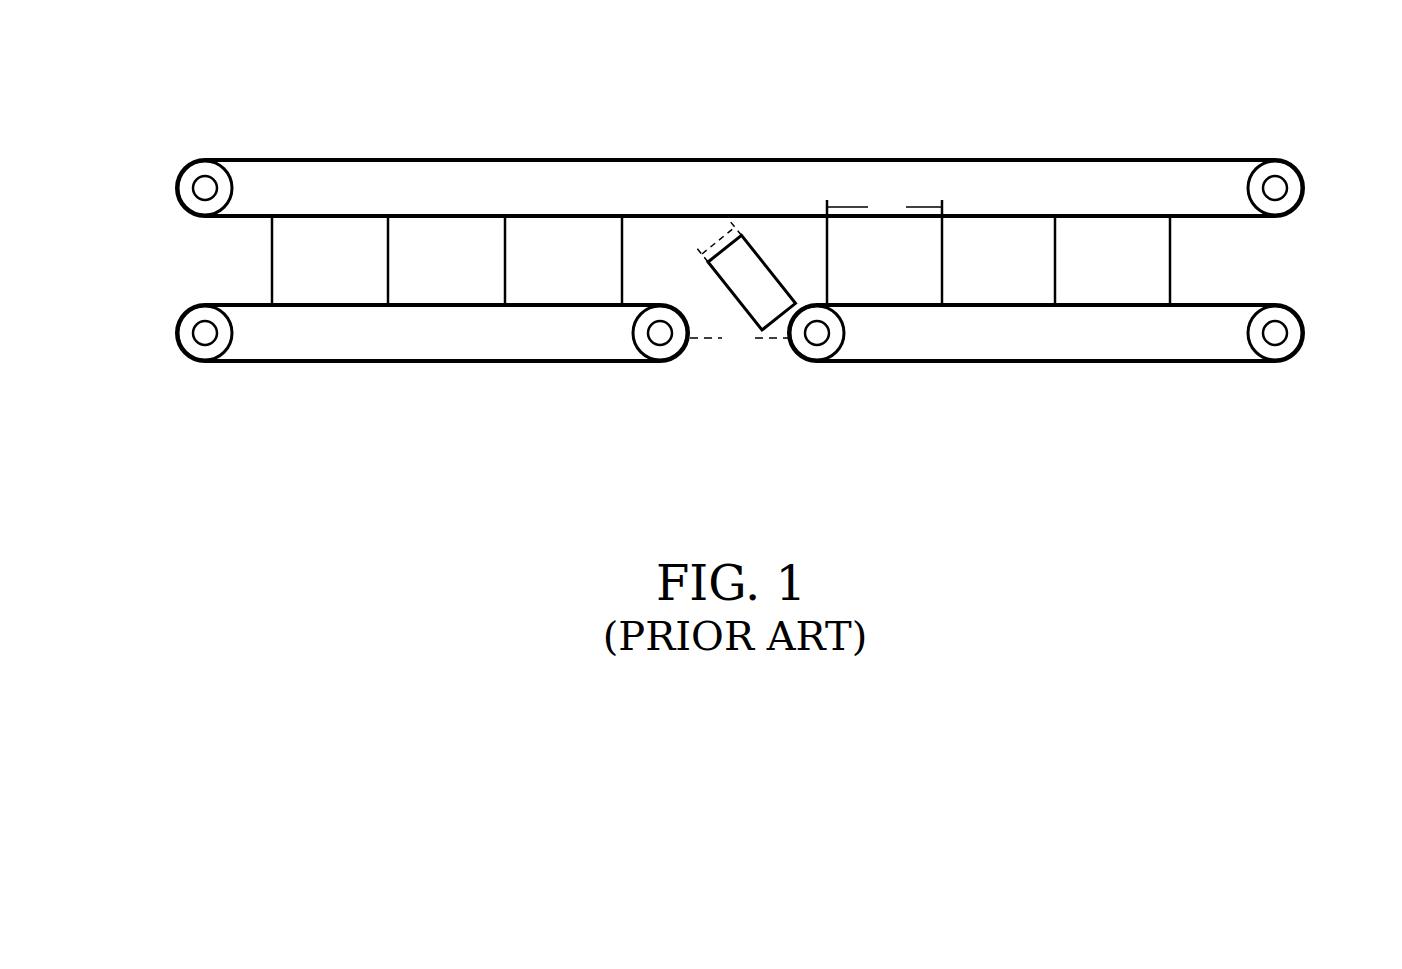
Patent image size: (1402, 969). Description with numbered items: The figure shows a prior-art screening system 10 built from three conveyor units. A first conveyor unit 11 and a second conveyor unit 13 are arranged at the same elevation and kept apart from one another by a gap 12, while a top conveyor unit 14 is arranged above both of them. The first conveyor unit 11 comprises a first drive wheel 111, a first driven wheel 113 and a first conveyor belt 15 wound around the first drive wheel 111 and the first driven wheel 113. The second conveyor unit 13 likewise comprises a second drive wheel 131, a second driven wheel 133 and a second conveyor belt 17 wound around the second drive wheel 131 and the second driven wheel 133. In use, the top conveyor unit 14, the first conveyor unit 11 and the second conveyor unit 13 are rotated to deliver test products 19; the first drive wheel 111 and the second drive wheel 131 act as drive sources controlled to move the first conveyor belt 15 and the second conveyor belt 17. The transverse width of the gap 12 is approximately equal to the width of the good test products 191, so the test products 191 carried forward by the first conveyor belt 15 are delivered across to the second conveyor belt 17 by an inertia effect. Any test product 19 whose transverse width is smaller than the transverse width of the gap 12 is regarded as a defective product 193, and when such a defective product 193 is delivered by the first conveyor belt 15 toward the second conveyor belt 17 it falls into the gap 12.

The screening system 10 is at (300, 100).
The first conveyor unit 11 is at (1090, 361).
The gap 12 is at (736, 360).
The second conveyor unit 13 is at (391, 364).
The top conveyor unit 14 is at (1034, 157).
The first conveyor belt 15 is at (1023, 362).
The second conveyor belt 17 is at (368, 366).
The test products 19 is at (767, 210).
The first drive wheel 111 is at (1277, 348).
The first driven wheel 113 is at (817, 350).
The second drive wheel 131 is at (200, 352).
The second driven wheel 133 is at (660, 350).
The test products 191 is at (813, 160).
The defective product 193 is at (753, 239).